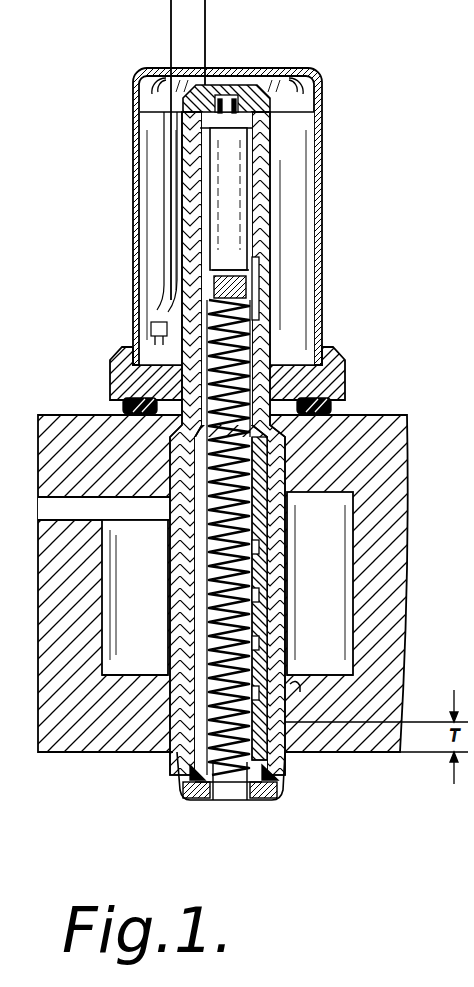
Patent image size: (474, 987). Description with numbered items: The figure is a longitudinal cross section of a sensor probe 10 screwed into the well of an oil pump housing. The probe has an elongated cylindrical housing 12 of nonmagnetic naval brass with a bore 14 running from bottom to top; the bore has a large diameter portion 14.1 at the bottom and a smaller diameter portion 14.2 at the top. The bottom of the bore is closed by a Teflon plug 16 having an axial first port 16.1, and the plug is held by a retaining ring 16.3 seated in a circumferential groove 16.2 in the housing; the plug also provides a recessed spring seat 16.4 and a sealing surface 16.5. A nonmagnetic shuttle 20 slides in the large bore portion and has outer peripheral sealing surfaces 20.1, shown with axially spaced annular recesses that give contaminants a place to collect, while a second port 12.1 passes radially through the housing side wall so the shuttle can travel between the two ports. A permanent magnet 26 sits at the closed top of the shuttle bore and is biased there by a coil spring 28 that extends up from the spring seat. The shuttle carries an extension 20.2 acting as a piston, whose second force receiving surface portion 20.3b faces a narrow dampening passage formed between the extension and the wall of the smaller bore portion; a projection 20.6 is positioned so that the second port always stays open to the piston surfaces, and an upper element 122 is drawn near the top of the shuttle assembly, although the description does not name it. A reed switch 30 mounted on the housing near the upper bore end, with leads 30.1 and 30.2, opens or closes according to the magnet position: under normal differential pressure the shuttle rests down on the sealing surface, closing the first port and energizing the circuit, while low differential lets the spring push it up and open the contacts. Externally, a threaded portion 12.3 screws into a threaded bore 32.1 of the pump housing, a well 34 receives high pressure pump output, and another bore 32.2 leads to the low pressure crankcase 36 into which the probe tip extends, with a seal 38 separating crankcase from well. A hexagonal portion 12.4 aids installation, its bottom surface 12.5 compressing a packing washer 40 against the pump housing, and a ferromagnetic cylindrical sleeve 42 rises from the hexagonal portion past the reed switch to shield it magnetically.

The sensor probe 10 is at (356, 123).
The housing 12 is at (223, 549).
The second port 12.1 is at (177, 513).
The threaded portion 12.3 is at (327, 417).
The hexagonal portion 12.4 is at (343, 362).
The bottom surface 12.5 is at (123, 411).
The bore 14 is at (247, 456).
The large diameter portion 14.1 is at (267, 747).
The smaller diameter portion 14.2 is at (257, 160).
The plug 16 is at (212, 814).
The first port 16.1 is at (233, 802).
The circumferential groove 16.2 is at (278, 780).
The retaining ring 16.3 is at (197, 793).
The recessed spring seat 16.4 is at (222, 790).
The sealing surface 16.5 is at (180, 790).
The shuttle 20 is at (280, 443).
The outer peripheral sealing surfaces 20.1 is at (283, 563).
The extension 20.2 is at (260, 303).
The second force receiving surface portion 20.3b is at (204, 86).
The projection 20.6 is at (210, 117).
The permanent magnet 26 is at (236, 187).
The coil spring 28 is at (210, 647).
The reed switch 30 is at (131, 182).
The lead 30.1 is at (170, 44).
The lead 30.2 is at (208, 28).
The threaded bore 32.1 is at (320, 583).
The bore 32.2 is at (135, 665).
The well 34 is at (105, 583).
The low pressure crankcase 36 is at (90, 826).
The seal 38 is at (297, 683).
The packing washer 40 is at (330, 404).
The cylindrical sleeve 42 is at (318, 195).
The contact 122 is at (247, 123).